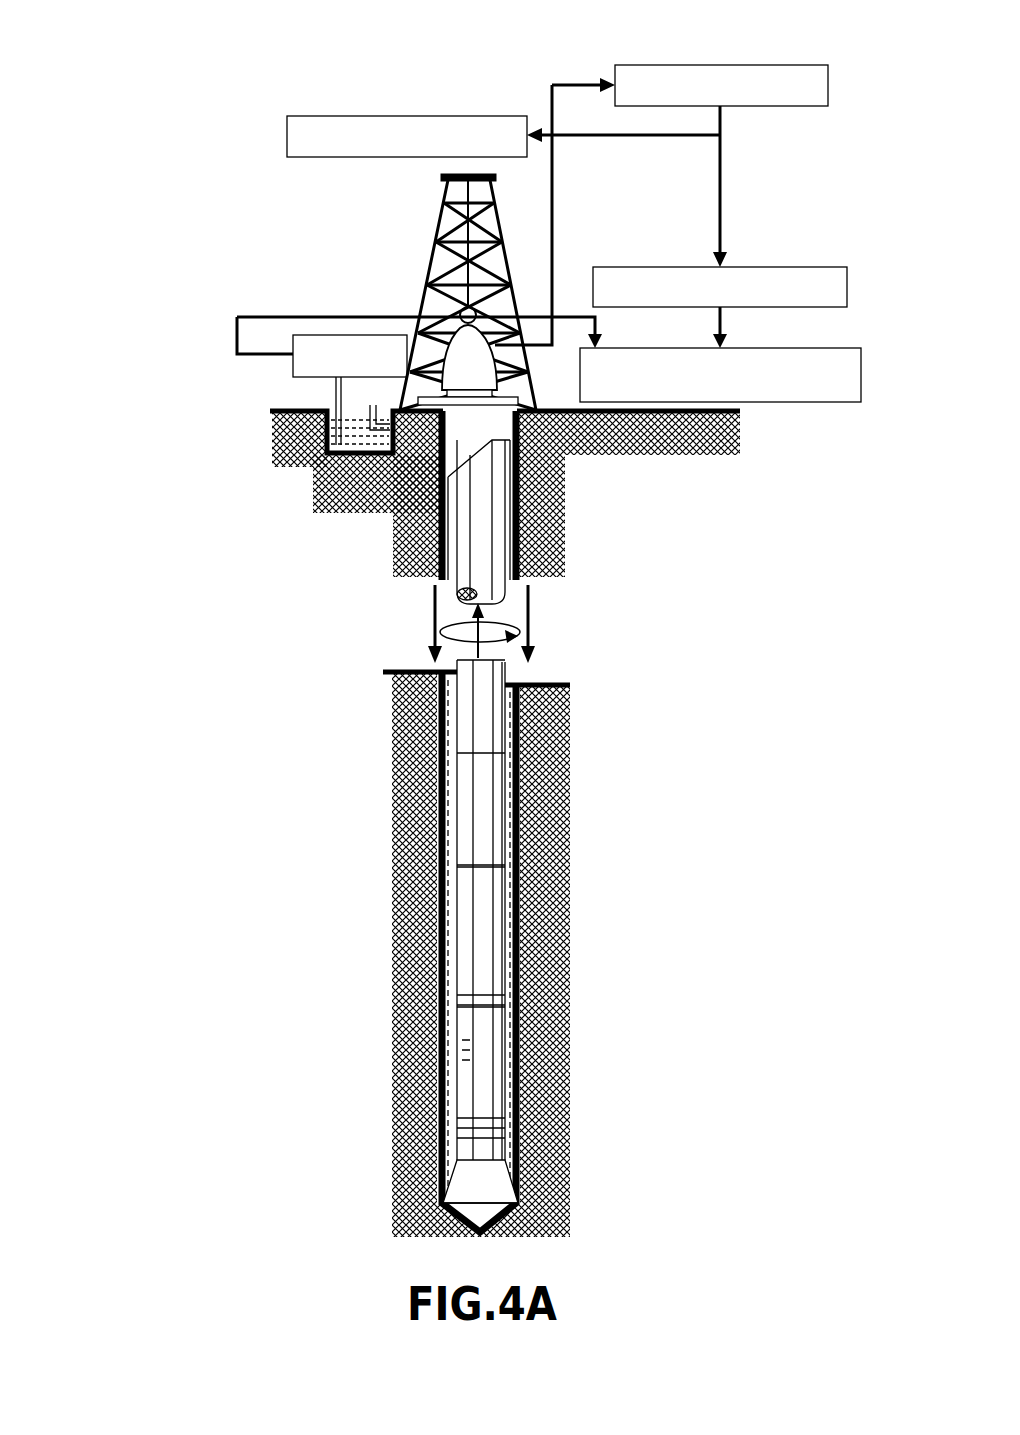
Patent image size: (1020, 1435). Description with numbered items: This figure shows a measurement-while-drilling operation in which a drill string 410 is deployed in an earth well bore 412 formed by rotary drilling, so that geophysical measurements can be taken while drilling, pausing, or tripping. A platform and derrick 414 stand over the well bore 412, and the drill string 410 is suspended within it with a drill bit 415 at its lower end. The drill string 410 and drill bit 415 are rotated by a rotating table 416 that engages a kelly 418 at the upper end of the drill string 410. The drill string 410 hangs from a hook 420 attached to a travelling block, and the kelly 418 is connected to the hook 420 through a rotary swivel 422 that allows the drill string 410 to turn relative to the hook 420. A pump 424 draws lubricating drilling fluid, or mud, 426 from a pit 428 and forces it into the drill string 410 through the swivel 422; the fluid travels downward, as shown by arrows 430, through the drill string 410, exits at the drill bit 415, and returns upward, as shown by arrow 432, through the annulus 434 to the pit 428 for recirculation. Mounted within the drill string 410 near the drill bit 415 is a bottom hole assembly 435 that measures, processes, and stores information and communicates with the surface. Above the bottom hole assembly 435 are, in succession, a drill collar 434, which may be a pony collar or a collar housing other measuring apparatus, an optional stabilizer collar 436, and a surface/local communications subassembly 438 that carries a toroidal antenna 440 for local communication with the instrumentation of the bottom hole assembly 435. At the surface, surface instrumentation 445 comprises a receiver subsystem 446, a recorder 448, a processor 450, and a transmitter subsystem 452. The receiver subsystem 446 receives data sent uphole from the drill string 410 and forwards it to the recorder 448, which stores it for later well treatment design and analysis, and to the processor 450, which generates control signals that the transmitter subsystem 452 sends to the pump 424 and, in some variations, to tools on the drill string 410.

The drill string 410 is at (336, 689).
The well bore 412 is at (505, 523).
The derrick 414 is at (443, 233).
The drill bit 415 is at (540, 1190).
The rotating table 416 is at (472, 393).
The kelly 418 is at (462, 337).
The hook 420 is at (437, 282).
The rotary swivel 422 is at (462, 312).
The pump 424 is at (297, 377).
The drilling fluid 426 is at (313, 467).
The pit 428 is at (272, 445).
The arrows 430 is at (313, 490).
The arrow 432 is at (507, 670).
The annulus 434 is at (548, 720).
The bottom hole assembly 435 is at (368, 1115).
The stabilizer collar 436 is at (368, 1007).
The surface/local communications subassembly 438 is at (368, 867).
The toroidal antenna 440 is at (477, 1002).
The surface instrumentation 445 is at (255, 25).
The receiver subsystem 446 is at (720, 65).
The recorder 448 is at (405, 116).
The processor 450 is at (767, 267).
The transmitter subsystem 452 is at (787, 348).